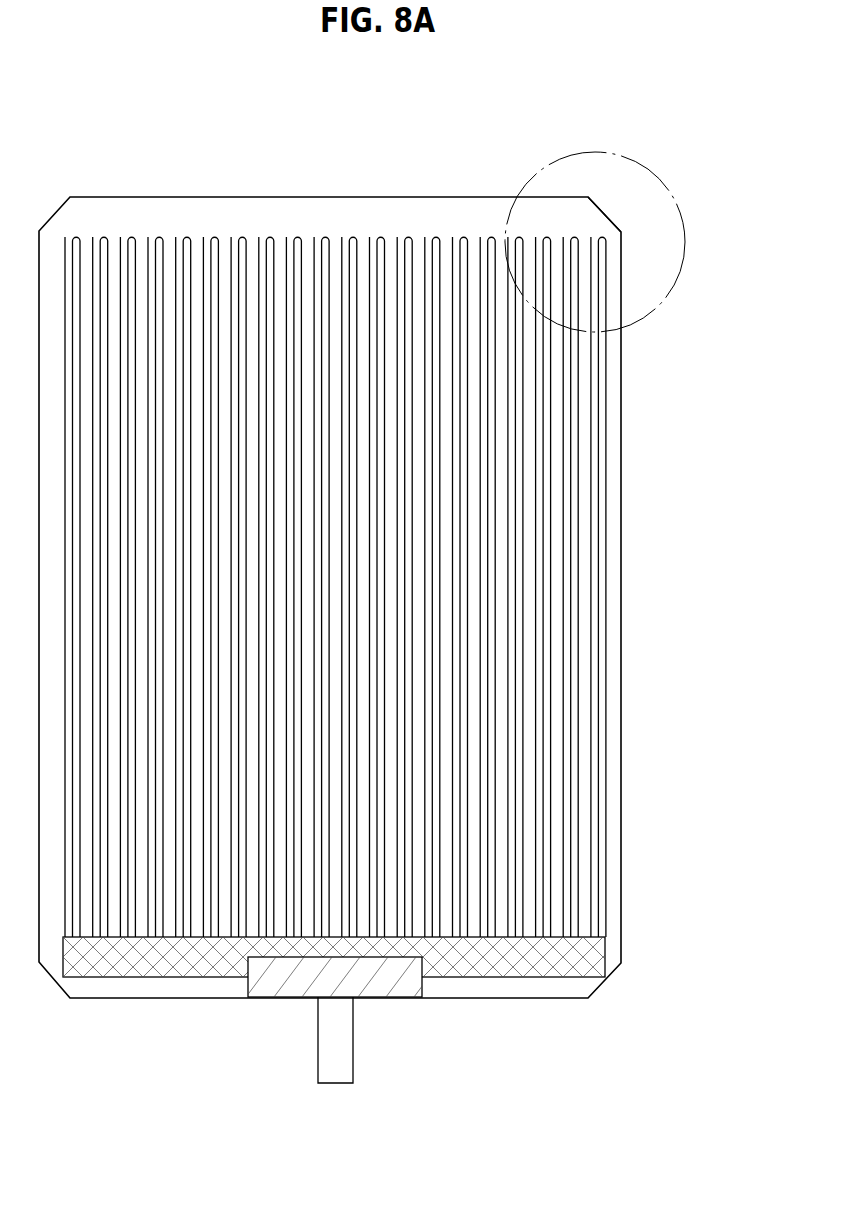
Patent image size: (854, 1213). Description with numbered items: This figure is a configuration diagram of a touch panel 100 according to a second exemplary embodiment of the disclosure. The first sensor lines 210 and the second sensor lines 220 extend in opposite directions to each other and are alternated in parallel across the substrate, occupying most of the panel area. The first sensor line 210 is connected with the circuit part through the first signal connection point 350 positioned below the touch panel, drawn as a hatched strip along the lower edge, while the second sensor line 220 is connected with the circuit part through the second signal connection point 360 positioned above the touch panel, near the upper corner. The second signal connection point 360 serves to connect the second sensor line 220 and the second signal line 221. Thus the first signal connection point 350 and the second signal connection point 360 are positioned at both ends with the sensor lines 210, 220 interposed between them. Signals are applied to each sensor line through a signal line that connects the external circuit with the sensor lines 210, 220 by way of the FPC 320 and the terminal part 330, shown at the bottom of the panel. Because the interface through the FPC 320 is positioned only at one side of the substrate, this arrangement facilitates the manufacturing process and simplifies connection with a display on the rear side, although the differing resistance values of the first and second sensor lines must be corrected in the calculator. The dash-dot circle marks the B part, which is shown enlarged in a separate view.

The electrode assembly / battery cell 100 is at (199, 196).
The first sensor line 210 is at (588, 237).
The second sensor line 220 is at (597, 360).
The second signal line 221 is at (603, 405).
The second signal connection point 360 is at (603, 240).
The B part B is at (525, 186).
The first signal connection point 350 is at (558, 960).
The terminal part 330 is at (393, 979).
The FPC 320 is at (330, 1042).